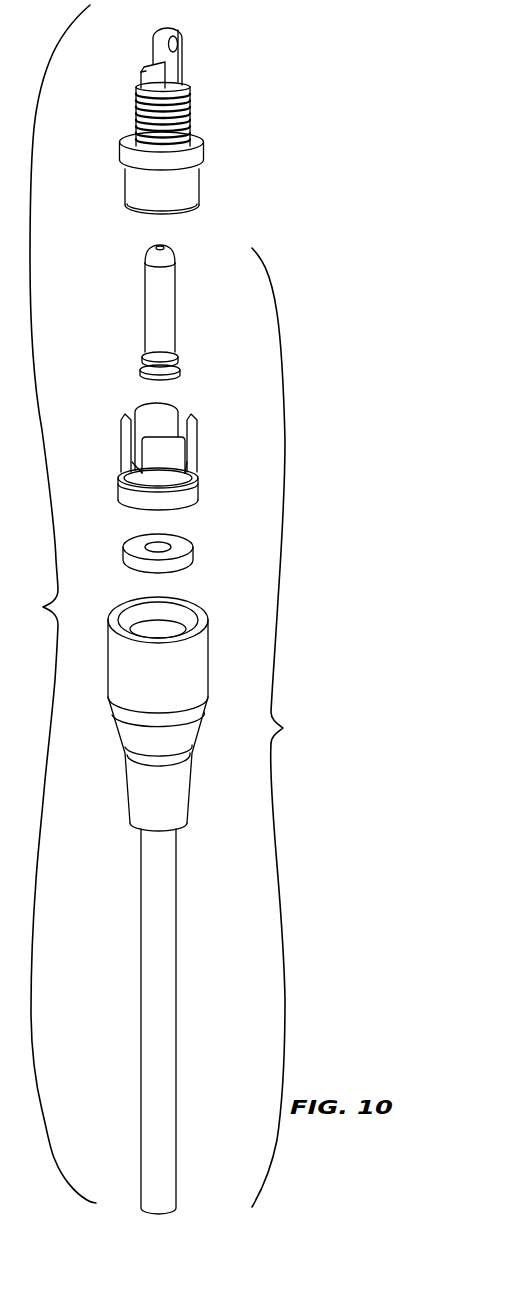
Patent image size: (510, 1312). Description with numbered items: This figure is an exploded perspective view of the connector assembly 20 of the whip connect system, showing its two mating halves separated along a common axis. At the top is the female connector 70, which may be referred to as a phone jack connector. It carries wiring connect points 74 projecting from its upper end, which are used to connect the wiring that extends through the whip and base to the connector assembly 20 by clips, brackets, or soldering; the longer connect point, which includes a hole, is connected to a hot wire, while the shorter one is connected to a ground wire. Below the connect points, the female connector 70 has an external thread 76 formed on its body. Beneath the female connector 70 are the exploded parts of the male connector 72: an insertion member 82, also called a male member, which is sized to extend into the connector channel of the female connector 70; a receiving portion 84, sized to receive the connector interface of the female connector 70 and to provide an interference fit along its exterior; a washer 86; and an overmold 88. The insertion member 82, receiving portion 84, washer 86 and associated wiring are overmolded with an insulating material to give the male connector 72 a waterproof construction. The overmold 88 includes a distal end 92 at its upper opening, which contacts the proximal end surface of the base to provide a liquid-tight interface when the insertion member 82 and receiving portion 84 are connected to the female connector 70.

The connector assembly 20 is at (43, 607).
The female connector 70 is at (157, 121).
The male connector 72 is at (280, 728).
The wiring connect points 74 is at (160, 44).
The external thread 76 is at (189, 120).
The insertion member 82 is at (157, 310).
The receiving portion 84 is at (122, 448).
The washer 86 is at (194, 546).
The overmold 88 is at (167, 901).
The distal end 92 is at (200, 613).